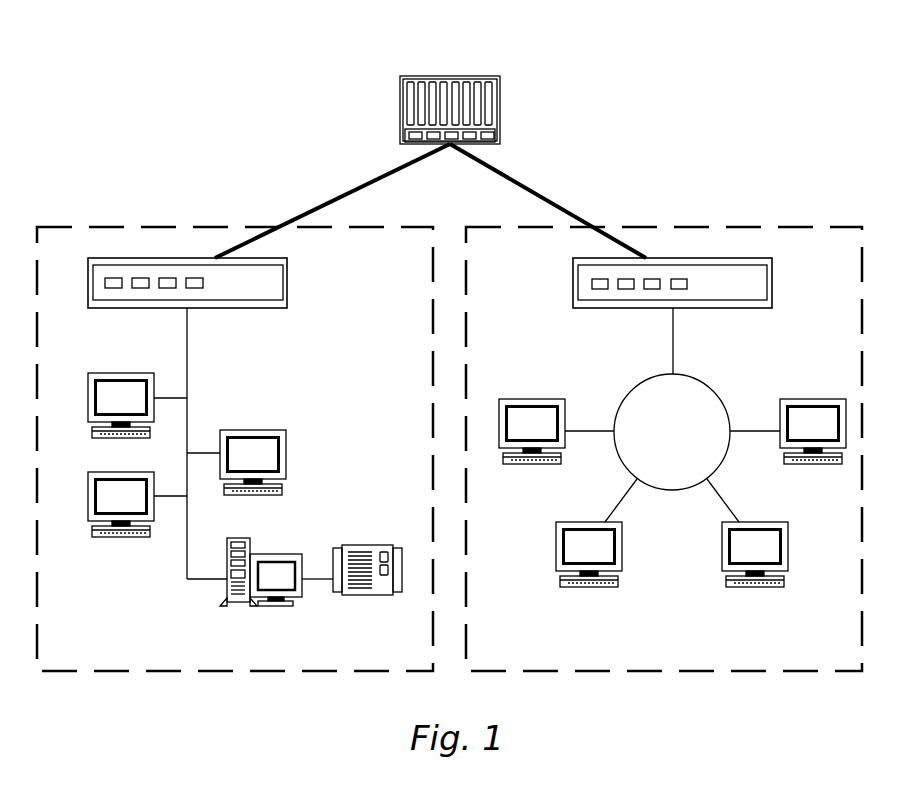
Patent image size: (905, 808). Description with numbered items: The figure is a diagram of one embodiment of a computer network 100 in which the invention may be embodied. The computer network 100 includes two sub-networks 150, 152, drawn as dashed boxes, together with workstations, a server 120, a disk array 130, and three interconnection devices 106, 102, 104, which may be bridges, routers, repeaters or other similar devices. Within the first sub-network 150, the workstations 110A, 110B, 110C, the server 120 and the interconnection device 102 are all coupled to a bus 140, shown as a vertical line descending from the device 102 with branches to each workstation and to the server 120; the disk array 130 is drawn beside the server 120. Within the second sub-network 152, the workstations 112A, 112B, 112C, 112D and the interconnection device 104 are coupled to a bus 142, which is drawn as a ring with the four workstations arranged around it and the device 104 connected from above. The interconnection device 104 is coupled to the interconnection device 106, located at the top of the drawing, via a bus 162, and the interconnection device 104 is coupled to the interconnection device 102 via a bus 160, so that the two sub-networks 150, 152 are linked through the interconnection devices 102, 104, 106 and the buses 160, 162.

The computer network 100 is at (640, 68).
The interconnection device 102 is at (165, 256).
The interconnection device 104 is at (693, 256).
The interconnection device 106 is at (452, 77).
The workstation 110A is at (122, 540).
The workstation 110B is at (118, 372).
The workstation 110C is at (255, 430).
The workstation 112A is at (540, 398).
The workstation 112B is at (592, 590).
The workstation 112C is at (757, 590).
The workstation 112D is at (803, 398).
The server 120 is at (270, 602).
The disk array 130 is at (367, 598).
The bus 140 is at (188, 342).
The bus 142 is at (691, 445).
The sub-network 150 is at (80, 663).
The sub-network 152 is at (508, 663).
The bus 160 is at (345, 192).
The bus 162 is at (532, 192).